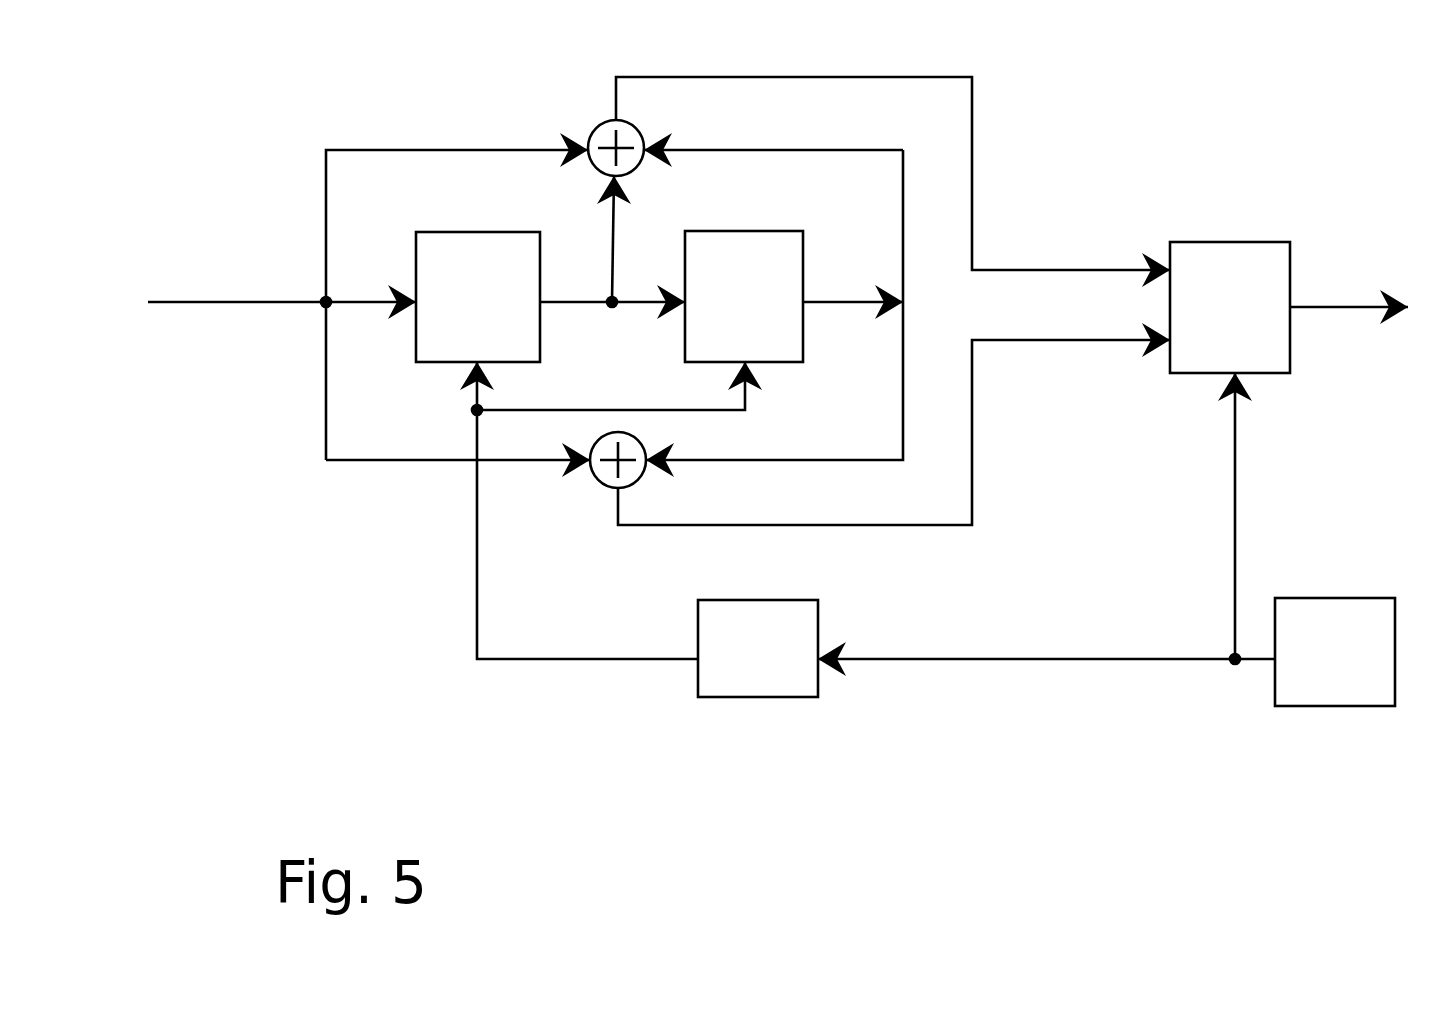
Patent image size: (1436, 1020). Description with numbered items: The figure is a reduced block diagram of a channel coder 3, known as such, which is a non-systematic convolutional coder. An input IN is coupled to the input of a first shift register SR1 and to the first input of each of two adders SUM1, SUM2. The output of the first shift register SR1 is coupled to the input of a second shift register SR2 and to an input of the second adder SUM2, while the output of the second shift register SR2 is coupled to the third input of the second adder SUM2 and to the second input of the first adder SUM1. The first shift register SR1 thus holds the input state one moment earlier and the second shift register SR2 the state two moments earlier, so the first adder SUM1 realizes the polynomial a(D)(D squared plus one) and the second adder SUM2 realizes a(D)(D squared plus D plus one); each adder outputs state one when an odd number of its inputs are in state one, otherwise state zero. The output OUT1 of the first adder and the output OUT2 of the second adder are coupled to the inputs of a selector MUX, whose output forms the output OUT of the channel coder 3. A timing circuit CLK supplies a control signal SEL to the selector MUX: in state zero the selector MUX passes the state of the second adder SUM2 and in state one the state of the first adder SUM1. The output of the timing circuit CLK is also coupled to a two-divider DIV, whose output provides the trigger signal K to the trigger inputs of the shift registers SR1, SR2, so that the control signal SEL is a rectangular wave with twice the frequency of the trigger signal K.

The channel coder 3 is at (266, 676).
The input IN is at (282, 294).
The first shift register SR1 is at (490, 232).
The second shift register SR2 is at (730, 231).
The first adder SUM1 is at (597, 485).
The second adder SUM2 is at (594, 126).
The output of the first adder OUT1 is at (894, 425).
The output of the second adder OUT2 is at (893, 157).
The selector MUX is at (1230, 307).
The output OUT is at (1349, 287).
The control signal SEL is at (1260, 518).
The timing circuit CLK is at (1335, 652).
The two-divider DIV is at (767, 697).
The trigger signal K is at (611, 510).